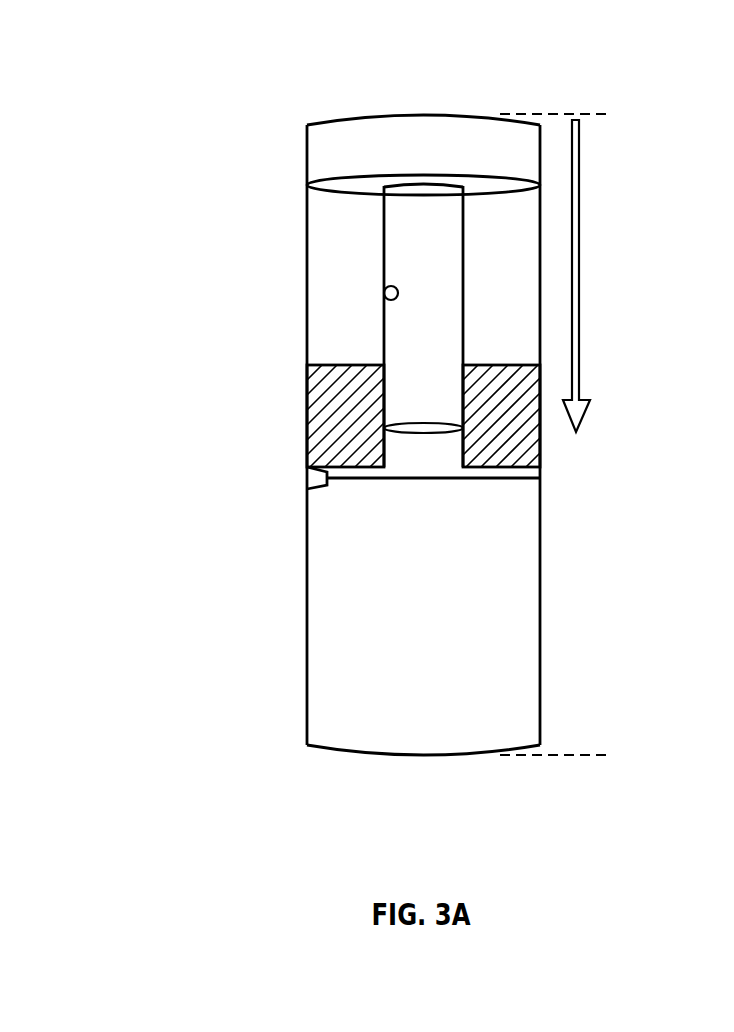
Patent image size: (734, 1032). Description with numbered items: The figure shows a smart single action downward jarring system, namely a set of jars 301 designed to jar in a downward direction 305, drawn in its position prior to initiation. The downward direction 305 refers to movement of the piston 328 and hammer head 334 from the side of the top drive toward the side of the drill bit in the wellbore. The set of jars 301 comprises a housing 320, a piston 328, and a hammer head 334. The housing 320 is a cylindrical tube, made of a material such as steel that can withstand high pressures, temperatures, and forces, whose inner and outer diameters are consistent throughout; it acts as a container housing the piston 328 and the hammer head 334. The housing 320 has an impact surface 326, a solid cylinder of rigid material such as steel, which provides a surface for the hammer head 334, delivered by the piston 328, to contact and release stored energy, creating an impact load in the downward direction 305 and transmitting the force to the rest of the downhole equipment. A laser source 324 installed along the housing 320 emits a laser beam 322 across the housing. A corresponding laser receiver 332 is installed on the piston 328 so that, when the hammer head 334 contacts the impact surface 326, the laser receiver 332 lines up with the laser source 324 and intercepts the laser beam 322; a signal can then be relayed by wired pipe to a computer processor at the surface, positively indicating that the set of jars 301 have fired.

The set of jars 301 is at (608, 115).
The downward direction 305 is at (575, 117).
The housing 320 is at (307, 353).
The laser beam 322 is at (375, 481).
The laser source 324 is at (307, 479).
The impact surface 326 is at (345, 365).
The piston 328 is at (400, 340).
The laser receiver 332 is at (384, 293).
The hammer head 334 is at (338, 152).